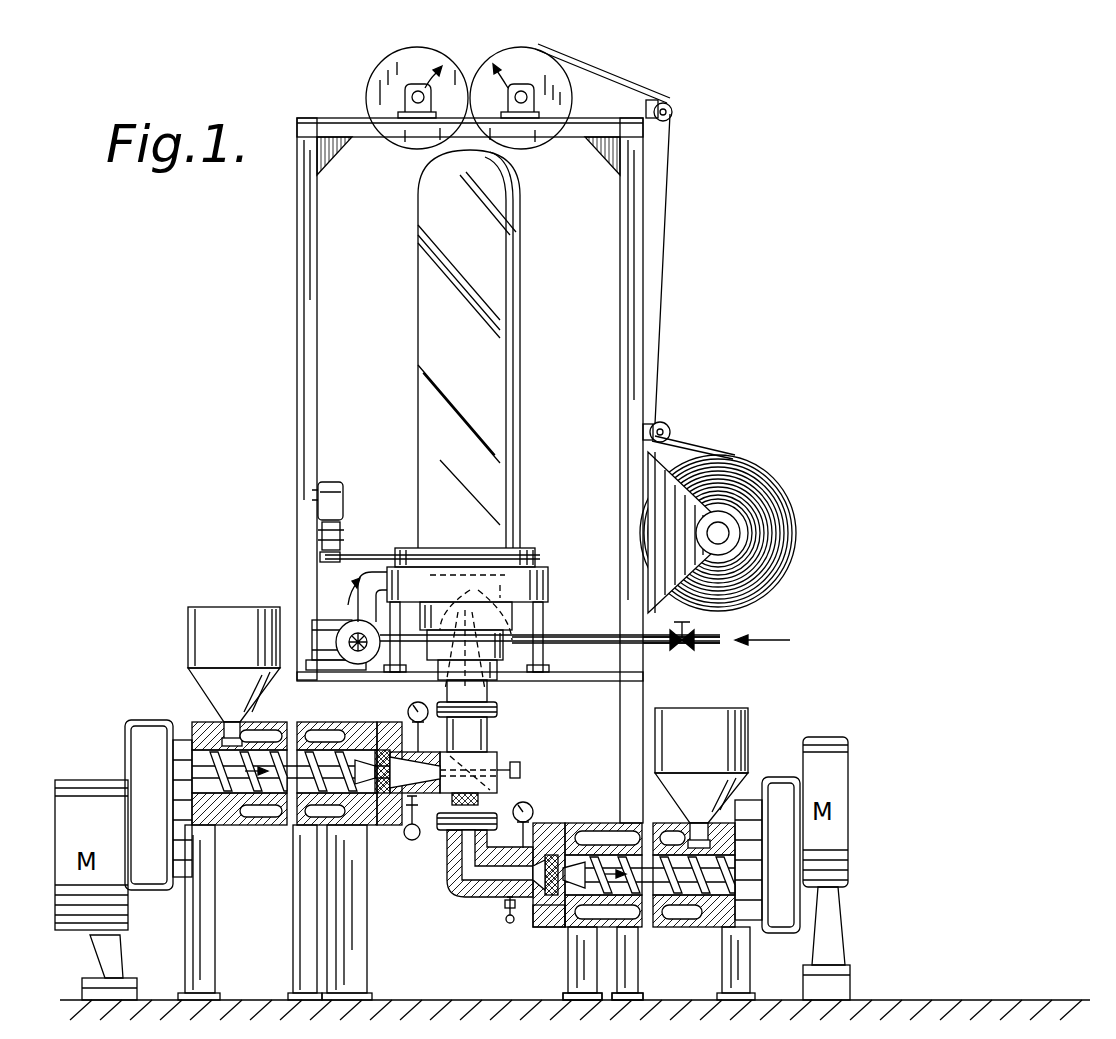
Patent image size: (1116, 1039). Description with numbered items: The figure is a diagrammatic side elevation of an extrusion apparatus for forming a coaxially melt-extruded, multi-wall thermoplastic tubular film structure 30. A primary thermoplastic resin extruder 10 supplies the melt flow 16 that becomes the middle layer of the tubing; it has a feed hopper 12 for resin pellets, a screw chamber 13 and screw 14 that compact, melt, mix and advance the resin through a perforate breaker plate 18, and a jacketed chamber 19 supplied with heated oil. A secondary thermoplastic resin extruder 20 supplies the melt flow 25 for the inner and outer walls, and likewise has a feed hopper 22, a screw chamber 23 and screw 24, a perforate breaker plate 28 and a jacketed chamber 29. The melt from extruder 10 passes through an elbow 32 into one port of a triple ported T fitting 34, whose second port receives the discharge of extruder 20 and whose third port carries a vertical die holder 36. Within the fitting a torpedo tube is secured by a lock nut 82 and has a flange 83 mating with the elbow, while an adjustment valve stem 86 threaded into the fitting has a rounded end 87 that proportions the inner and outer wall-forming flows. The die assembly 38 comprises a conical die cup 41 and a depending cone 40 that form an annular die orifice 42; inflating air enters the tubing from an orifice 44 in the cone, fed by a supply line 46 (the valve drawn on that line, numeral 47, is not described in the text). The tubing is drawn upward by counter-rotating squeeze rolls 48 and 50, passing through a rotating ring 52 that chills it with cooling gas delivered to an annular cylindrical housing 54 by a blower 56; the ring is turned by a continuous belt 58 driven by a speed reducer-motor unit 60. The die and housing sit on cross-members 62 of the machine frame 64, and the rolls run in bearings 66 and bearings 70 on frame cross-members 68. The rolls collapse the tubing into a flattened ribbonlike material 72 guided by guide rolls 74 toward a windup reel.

The primary thermoplastic resin extruder 10 is at (592, 818).
The feed hopper 12 is at (748, 722).
The screw chamber 13 is at (566, 895).
The screw 14 is at (593, 886).
The melt flow 16 is at (540, 862).
The perforate breaker plate 18 is at (535, 920).
The jacketed chamber 19 is at (681, 914).
The secondary thermoplastic resin extruder 20 is at (188, 712).
The feed hopper 22 is at (193, 615).
The screw chamber 23 is at (378, 826).
The screw 24 is at (350, 796).
The melt flow 25 is at (422, 798).
The perforate breaker plate 28 is at (388, 752).
The jacketed chamber 29 is at (258, 826).
The triple wall tubular film structure 30 is at (512, 332).
The elbow 32 is at (470, 892).
The triple ported T fitting 34 is at (500, 760).
The vertical die holder 36 is at (490, 736).
The die assembly 38 is at (525, 617).
The depending cone 40 is at (510, 696).
The conical die cup 41 is at (445, 625).
The annular die orifice 42 is at (503, 598).
The orifice 44 is at (533, 587).
The supply line 46 is at (702, 647).
The air valve 47 is at (695, 632).
The squeeze roll 48 is at (398, 52).
The squeeze roll 50 is at (535, 65).
The rotating ring 52 is at (535, 550).
The annular cylindrical housing 54 is at (548, 580).
The blower 56 is at (342, 614).
The continuous belt 58 is at (368, 557).
The speed reducer-motor combination unit 60 is at (333, 480).
The cross-members 62 is at (606, 700).
The machine frame 64 is at (290, 352).
The bearings 66 is at (405, 95).
The frame cross-members 68 is at (330, 117).
The bearings 70 is at (530, 95).
The flattened ribbonlike material 72 is at (665, 232).
The guide rolls 74 is at (670, 114).
The lock nut 82 is at (514, 824).
The flange 83 is at (490, 835).
The adjustment valve stem 86 is at (522, 770).
The rounded end 87 is at (427, 727).